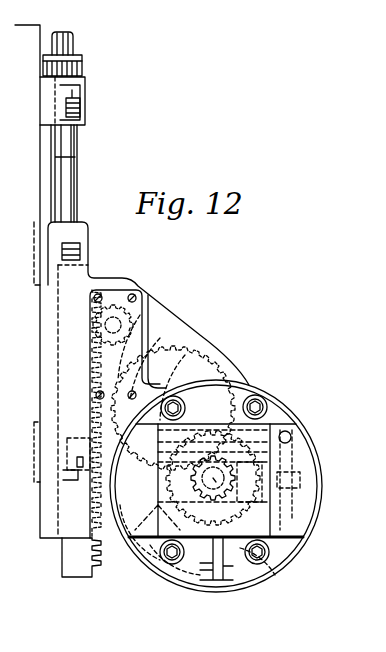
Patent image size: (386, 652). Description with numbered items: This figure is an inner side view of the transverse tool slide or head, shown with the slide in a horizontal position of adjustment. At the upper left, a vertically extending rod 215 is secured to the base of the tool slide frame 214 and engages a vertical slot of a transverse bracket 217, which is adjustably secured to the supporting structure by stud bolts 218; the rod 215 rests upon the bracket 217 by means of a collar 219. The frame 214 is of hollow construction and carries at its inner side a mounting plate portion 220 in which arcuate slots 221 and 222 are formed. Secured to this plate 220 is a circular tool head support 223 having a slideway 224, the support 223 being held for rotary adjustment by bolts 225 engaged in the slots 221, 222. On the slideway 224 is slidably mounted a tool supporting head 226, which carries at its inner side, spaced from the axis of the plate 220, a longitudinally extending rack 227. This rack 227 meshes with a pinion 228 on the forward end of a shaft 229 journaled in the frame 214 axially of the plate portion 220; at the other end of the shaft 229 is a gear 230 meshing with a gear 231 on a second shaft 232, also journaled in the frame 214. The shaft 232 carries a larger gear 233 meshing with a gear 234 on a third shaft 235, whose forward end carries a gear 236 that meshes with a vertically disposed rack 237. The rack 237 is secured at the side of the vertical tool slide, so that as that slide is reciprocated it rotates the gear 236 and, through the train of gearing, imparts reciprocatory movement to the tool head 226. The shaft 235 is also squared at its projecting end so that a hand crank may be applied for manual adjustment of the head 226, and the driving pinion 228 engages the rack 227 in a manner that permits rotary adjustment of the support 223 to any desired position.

The tool slide frame 214 is at (222, 352).
The vertically extending rod 215 is at (63, 173).
The transverse bracket 217 is at (78, 92).
The stud bolts 218 is at (82, 114).
The collar 219 is at (84, 66).
The mounting plate portion 220 is at (247, 378).
The arcuate slot 221 is at (292, 400).
The arcuate slot 222 is at (267, 577).
The circular tool head support 223 is at (230, 398).
The slideway 224 is at (294, 441).
The bolts 225 is at (288, 550).
The tool supporting head 226 is at (300, 528).
The longitudinally extending rack 227 is at (305, 460).
The pinion 228 is at (193, 573).
The shaft 229 is at (233, 583).
The gear 230 is at (138, 552).
The gear 231 is at (196, 350).
The shaft 232 is at (176, 338).
The larger gear 233 is at (155, 318).
The gear 234 is at (128, 282).
The shaft 235 is at (115, 270).
The gear 236 is at (133, 302).
The vertically disposed rack 237 is at (84, 570).